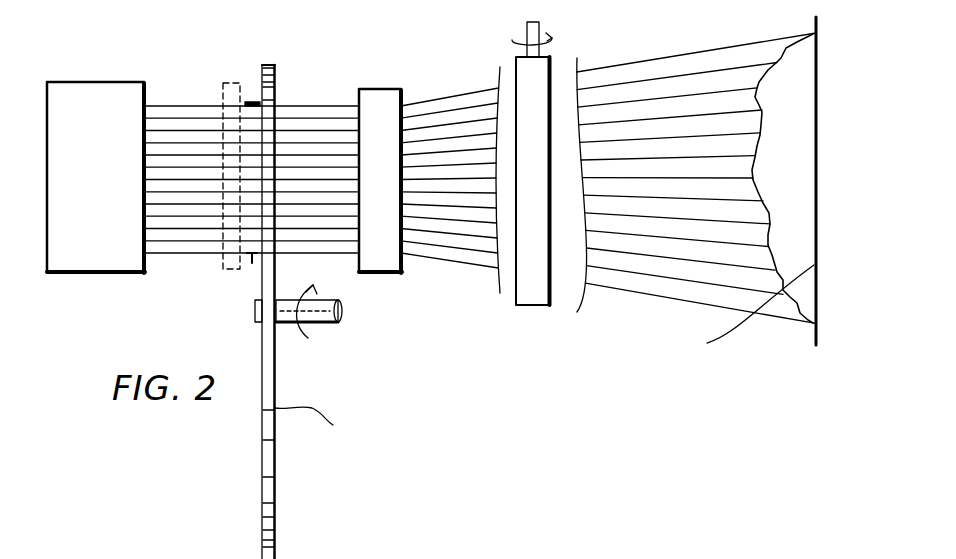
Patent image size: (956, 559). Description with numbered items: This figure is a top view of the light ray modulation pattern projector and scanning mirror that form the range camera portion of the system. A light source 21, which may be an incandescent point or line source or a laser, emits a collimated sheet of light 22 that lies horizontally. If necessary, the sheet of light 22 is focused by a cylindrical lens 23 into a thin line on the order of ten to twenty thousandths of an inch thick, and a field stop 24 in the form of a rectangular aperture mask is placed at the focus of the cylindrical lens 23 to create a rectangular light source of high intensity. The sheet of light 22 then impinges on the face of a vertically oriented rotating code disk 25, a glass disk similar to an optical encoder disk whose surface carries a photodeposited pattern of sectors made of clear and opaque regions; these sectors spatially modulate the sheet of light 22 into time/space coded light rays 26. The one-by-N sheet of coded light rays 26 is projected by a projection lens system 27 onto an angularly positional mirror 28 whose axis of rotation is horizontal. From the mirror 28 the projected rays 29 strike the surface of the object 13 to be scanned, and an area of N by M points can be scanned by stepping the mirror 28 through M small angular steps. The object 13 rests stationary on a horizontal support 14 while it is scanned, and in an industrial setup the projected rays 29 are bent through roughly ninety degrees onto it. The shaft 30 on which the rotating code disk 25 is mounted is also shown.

The object 13 is at (760, 80).
The horizontal support 14 is at (813, 327).
The light source 21 is at (107, 93).
The sheet of light 22 is at (193, 107).
The cylindrical lens 23 is at (221, 266).
The field stop 24 is at (252, 100).
The rotating code disk 25 is at (265, 440).
The coded light rays 26 is at (322, 105).
The projection lens system 27 is at (387, 272).
The angularly positional mirror 28 is at (535, 305).
The projected rays 29 is at (653, 298).
The shaft 30 is at (375, 422).